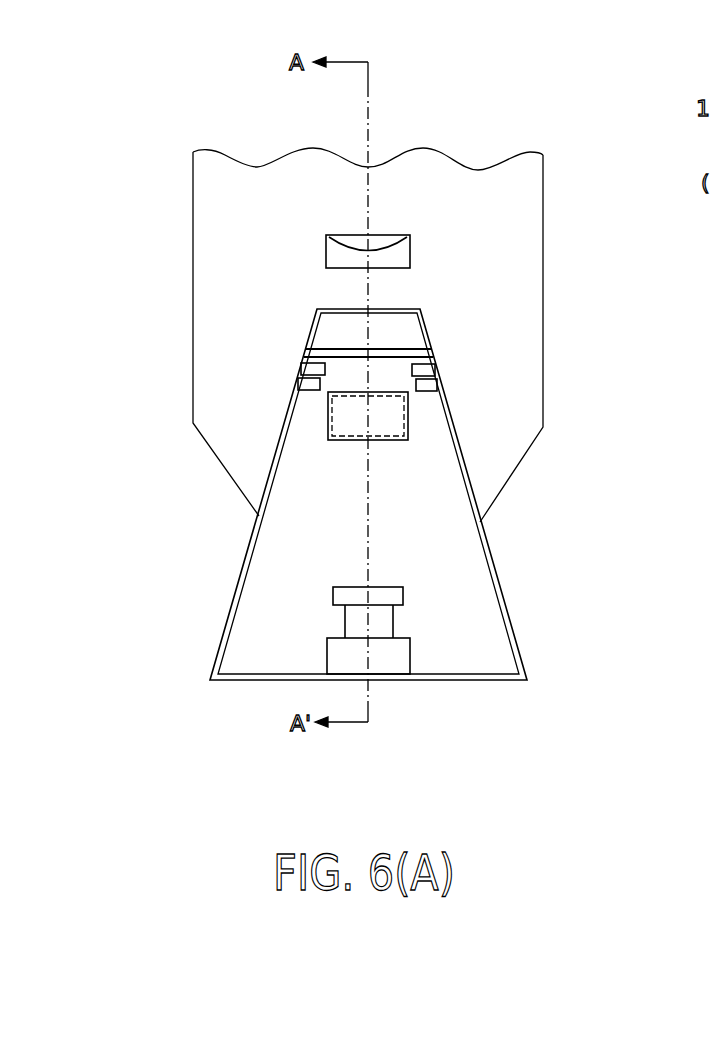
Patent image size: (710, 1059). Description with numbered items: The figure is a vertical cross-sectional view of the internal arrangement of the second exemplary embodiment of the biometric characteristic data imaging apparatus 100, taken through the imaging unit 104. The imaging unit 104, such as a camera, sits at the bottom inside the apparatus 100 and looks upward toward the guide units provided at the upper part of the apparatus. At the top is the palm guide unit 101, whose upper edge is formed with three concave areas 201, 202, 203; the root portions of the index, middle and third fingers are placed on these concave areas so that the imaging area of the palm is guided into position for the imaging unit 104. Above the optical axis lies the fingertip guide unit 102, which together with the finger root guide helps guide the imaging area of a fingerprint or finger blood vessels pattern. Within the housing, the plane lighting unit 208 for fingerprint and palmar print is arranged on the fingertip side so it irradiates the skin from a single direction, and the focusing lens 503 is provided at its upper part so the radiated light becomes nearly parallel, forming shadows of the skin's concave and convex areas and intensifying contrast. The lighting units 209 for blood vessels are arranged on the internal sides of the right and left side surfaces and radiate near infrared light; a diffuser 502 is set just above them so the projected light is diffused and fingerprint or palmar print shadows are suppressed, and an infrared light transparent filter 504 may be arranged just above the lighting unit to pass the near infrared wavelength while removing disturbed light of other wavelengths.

The imaging apparatus 100 is at (231, 600).
The palm guide unit 101 is at (532, 156).
The fingertip guide unit 102 is at (326, 250).
The imaging unit 104 is at (333, 637).
The concave area 201 is at (257, 166).
The concave area 202 is at (366, 167).
The concave area 203 is at (478, 170).
The lighting unit for fingerprint and palmar print 208 is at (353, 440).
The lighting unit for blood vessels 209 is at (310, 391).
The diffuser 502 is at (463, 346).
The focusing lens 503 is at (383, 440).
The infrared light transparent filter 504 is at (382, 357).